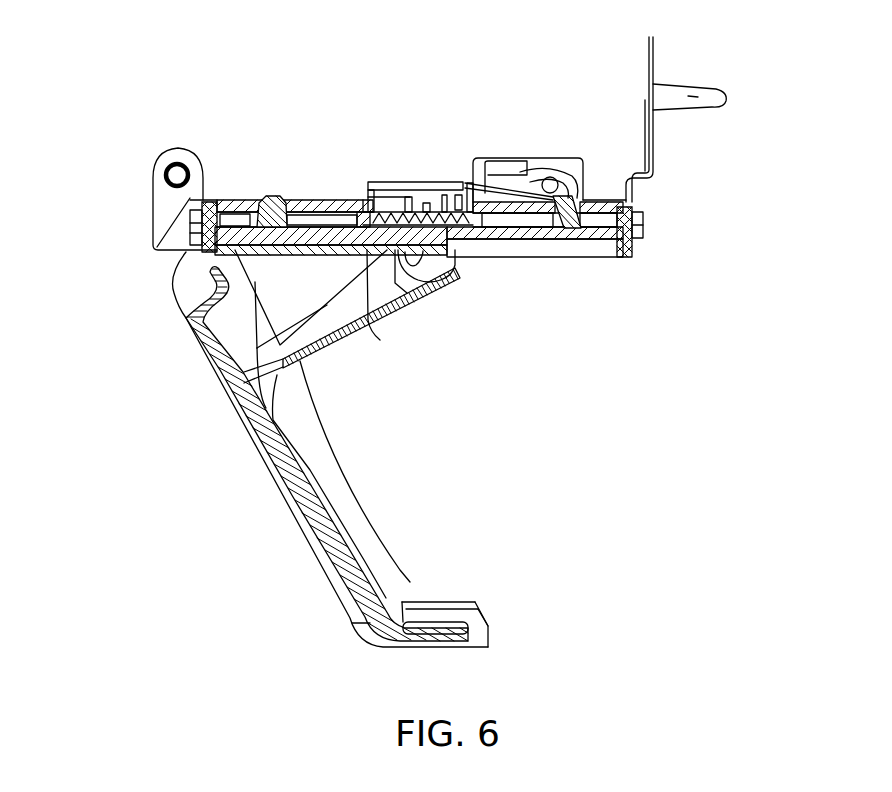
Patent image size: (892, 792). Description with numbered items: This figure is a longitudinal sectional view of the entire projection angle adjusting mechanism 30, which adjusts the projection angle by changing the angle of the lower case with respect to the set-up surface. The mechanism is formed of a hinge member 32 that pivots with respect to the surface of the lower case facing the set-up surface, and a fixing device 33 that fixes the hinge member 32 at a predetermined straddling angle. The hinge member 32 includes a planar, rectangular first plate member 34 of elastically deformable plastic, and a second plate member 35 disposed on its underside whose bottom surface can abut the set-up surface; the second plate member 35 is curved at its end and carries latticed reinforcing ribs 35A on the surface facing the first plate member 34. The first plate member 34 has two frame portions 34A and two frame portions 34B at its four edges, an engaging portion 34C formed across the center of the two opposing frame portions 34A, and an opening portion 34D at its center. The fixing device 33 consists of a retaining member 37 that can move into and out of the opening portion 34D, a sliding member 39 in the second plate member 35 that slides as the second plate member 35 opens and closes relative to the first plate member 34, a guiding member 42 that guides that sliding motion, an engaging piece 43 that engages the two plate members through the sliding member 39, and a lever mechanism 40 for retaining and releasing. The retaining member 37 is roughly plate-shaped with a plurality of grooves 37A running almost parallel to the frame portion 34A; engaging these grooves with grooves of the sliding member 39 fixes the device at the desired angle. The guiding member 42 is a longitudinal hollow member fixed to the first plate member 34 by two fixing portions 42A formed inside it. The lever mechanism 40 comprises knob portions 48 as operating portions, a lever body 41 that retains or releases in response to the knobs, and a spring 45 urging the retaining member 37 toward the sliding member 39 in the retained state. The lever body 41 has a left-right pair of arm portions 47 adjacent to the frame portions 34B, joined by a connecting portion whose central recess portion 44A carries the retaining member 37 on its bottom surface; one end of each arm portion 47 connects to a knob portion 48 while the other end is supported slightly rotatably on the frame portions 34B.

The projection angle adjusting mechanism 30 is at (170, 90).
The hinge member 32 is at (607, 295).
The fixing device 33 is at (455, 283).
The first plate member 34 is at (325, 200).
The frame portion 34A is at (180, 297).
The frame portion 34B is at (520, 250).
The engaging portion 34C is at (157, 259).
The opening portion 34D is at (345, 205).
The second plate member 35 is at (257, 450).
The reinforcing ribs 35A is at (355, 572).
The retaining member 37 is at (375, 215).
The grooves 37A is at (413, 210).
The sliding member 39 is at (314, 255).
The lever mechanism 40 is at (592, 103).
The lever body 41 is at (668, 150).
The guiding member 42 is at (370, 318).
The fixing portions 42A is at (268, 197).
The engaging piece 43 is at (330, 345).
The recess portion 44A is at (365, 200).
The spring 45 is at (177, 175).
The arm portions 47 is at (637, 177).
The knob portions 48 is at (712, 93).